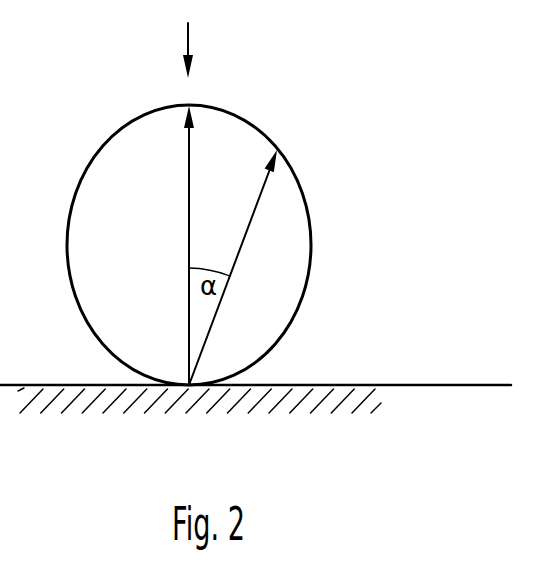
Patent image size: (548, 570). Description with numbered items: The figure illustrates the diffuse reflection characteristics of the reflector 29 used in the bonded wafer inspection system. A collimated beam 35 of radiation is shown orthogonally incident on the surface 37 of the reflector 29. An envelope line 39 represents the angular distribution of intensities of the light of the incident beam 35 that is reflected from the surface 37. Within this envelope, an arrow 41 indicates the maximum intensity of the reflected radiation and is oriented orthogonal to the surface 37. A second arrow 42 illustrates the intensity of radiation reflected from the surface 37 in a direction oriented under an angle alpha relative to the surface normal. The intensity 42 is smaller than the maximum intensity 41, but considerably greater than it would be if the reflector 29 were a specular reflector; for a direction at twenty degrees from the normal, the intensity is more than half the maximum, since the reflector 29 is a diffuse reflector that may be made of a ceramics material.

The reflector 29 is at (412, 366).
The collimated beam 35 is at (188, 42).
The surface 37 is at (299, 385).
The envelope line 39 is at (82, 172).
The arrow 41 is at (188, 165).
The arrow 42 is at (257, 212).